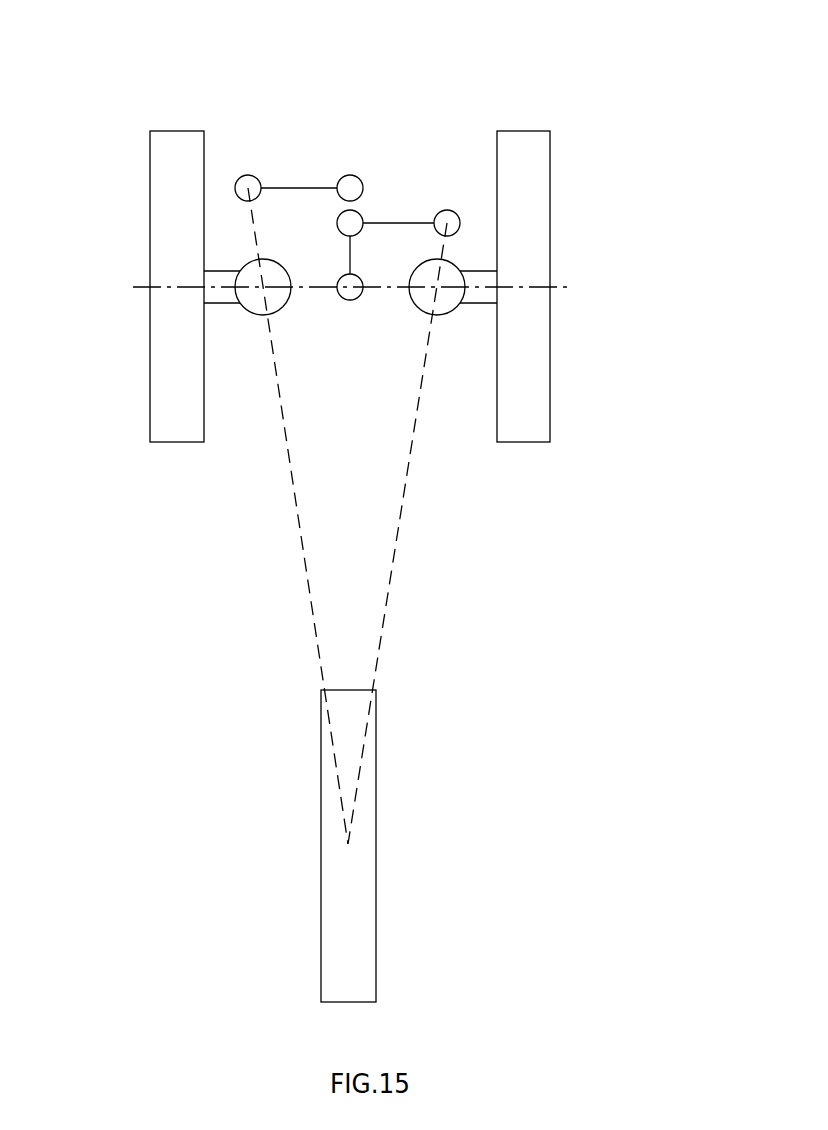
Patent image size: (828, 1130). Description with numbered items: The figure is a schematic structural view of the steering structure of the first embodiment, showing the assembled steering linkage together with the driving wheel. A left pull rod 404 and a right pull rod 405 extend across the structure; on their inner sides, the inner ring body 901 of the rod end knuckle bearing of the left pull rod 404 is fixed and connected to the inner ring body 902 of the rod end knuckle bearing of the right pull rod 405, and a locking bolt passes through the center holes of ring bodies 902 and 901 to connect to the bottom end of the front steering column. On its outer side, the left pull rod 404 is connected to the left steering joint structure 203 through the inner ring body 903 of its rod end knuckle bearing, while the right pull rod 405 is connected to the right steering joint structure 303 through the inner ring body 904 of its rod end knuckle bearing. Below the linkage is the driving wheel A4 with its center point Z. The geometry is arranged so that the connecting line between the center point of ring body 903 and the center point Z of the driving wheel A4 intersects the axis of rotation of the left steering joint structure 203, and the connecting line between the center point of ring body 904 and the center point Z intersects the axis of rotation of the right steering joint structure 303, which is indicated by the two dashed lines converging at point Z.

The left steering joint structure 203 is at (263, 287).
The right steering joint structure 303 is at (437, 287).
The inner ring body of the rod end knuckle bearing on the inner side of the left pul 901 is at (350, 188).
The inner ring body of the rod end knuckle bearing on the inner side of the right pu 902 is at (350, 223).
The inner ring body of the rod end knuckle bearing on the outer side of the left pul 903 is at (248, 188).
The inner ring body of the rod end knuckle bearing on the outer side of the right pu 904 is at (447, 223).
The left pull rod 404 is at (290, 188).
The right pull rod 405 is at (399, 223).
The driving wheel A4 is at (355, 930).
The center point of the driving wheel Z is at (348, 845).